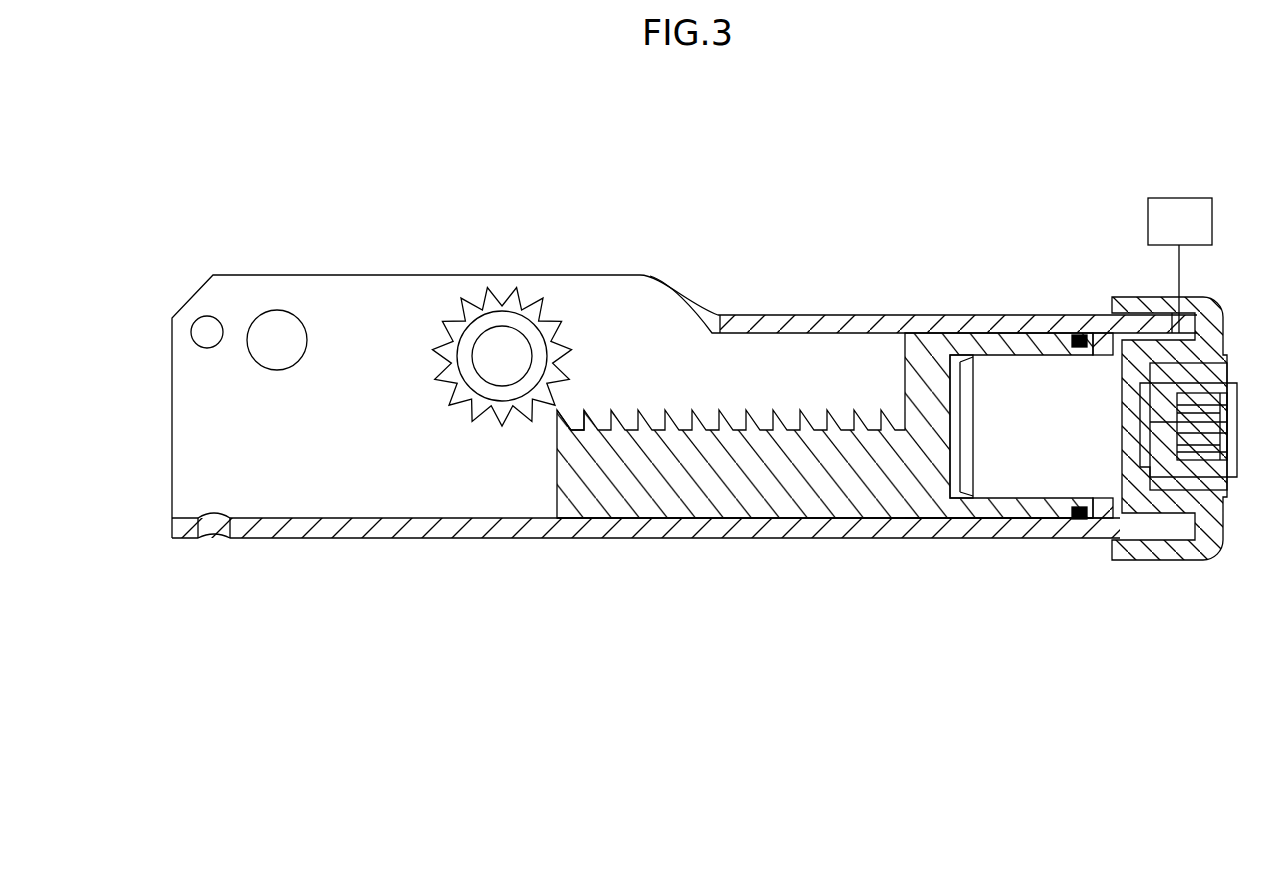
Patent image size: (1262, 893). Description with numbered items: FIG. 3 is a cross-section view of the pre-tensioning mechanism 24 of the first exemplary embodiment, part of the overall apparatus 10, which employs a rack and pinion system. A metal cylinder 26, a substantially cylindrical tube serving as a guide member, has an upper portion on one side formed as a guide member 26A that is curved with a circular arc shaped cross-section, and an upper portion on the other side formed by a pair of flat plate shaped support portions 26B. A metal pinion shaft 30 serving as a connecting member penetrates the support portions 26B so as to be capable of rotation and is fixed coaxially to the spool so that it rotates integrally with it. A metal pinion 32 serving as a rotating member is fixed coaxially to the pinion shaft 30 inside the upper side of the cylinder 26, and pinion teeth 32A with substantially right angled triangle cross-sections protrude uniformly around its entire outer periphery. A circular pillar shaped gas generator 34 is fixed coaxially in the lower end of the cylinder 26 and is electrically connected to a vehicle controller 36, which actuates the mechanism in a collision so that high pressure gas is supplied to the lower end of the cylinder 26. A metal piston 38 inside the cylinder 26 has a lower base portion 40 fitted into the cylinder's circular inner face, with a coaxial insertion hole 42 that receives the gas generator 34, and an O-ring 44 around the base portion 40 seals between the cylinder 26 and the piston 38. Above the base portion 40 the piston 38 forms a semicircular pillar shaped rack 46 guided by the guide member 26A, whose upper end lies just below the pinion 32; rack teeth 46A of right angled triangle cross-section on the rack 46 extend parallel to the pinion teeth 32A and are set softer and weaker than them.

The apparatus 10 is at (704, 364).
The pre-tensioning mechanism 24 is at (452, 192).
The cylinder 26 is at (800, 315).
The guide member 26A is at (382, 538).
The support portions 26B is at (355, 275).
The pinion shaft 30 is at (490, 362).
The pinion 32 is at (508, 290).
The pinion teeth 32A is at (566, 323).
The gas generator 34 is at (1000, 353).
The controller 36 is at (1180, 198).
The piston 38 is at (781, 520).
The base portion 40 is at (930, 520).
The insertion hole 42 is at (1037, 360).
The O-ring 44 is at (1079, 522).
The rack 46 is at (557, 470).
The rack teeth 46A is at (563, 410).